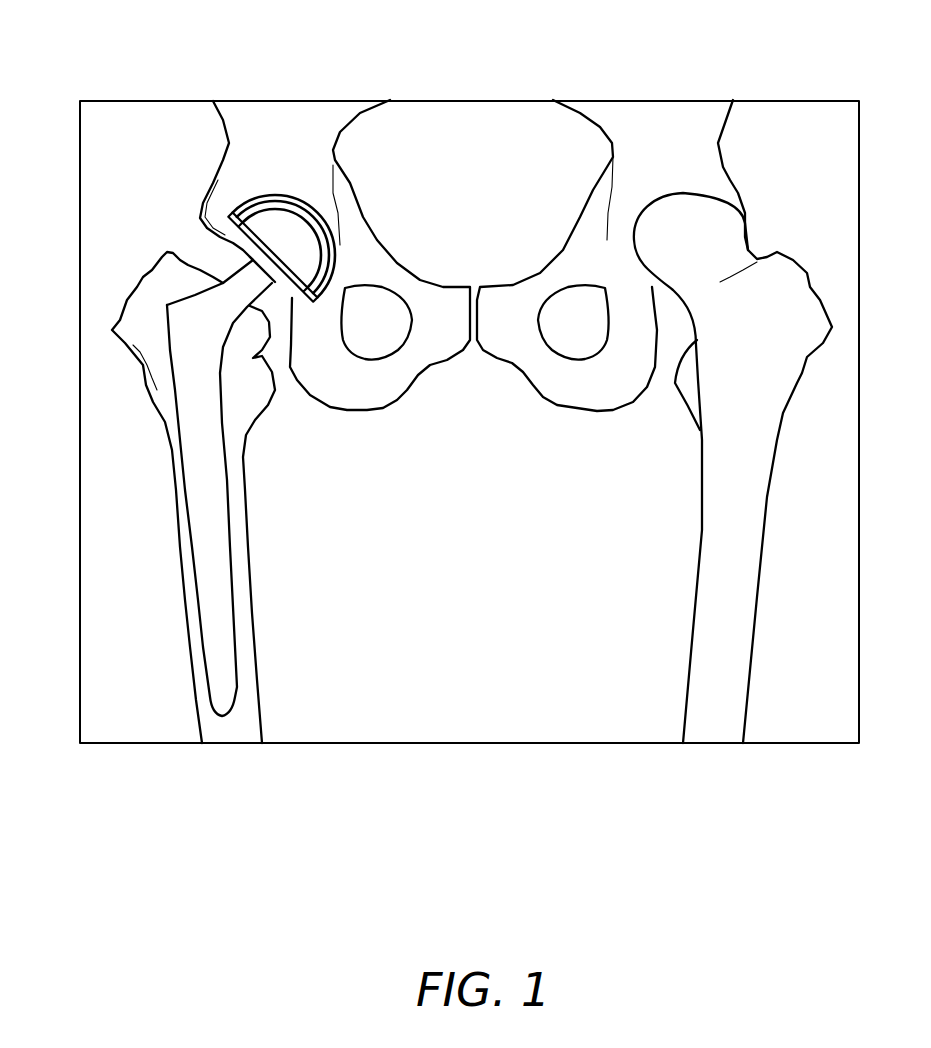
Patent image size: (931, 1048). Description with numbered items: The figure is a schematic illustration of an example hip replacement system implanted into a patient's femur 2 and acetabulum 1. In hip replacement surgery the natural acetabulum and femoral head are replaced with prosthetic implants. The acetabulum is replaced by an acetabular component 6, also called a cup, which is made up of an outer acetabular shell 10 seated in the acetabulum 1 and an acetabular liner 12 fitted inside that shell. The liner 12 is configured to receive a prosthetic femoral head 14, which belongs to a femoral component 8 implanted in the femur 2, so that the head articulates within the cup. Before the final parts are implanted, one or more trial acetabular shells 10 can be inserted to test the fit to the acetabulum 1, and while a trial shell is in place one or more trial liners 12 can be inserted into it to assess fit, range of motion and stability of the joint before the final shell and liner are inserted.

The acetabulum 1 is at (268, 366).
The femur 2 is at (180, 542).
The acetabular component 6 is at (267, 193).
The femoral component 8 is at (173, 388).
The acetabular shell 10 is at (285, 195).
The acetabular liner 12 is at (334, 252).
The femoral head 14 is at (257, 218).